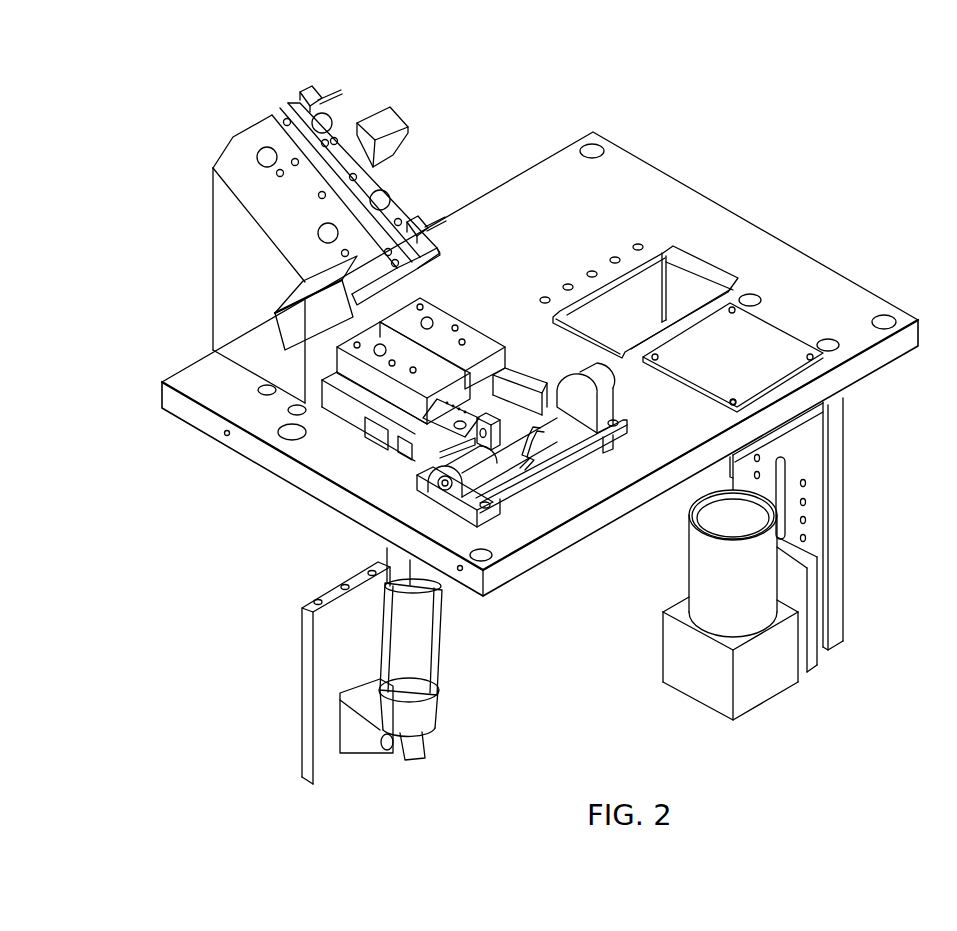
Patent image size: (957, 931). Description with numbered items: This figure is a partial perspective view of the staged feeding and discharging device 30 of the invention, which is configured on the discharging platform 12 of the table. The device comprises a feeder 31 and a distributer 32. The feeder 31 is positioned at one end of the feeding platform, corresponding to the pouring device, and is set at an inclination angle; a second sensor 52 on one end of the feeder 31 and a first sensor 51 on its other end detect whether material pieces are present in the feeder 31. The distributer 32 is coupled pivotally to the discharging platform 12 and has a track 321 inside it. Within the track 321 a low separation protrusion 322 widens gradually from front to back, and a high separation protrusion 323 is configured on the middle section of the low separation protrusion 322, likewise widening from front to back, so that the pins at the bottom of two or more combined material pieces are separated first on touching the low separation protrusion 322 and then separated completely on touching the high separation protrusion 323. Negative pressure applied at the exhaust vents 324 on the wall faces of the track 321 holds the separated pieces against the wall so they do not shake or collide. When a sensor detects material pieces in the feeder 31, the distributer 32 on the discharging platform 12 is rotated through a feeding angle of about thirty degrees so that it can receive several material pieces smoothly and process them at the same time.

The discharging platform 12 is at (828, 288).
The staged feeding and discharging device 30 is at (289, 319).
The feeder 31 is at (292, 230).
The distributer 32 is at (377, 390).
The track 321 is at (430, 345).
The low separation protrusion 322 is at (442, 372).
The high separation protrusion 323 is at (500, 400).
The exhaust vents 324 is at (453, 403).
The first sensor 51 is at (417, 227).
The second sensor 52 is at (313, 95).